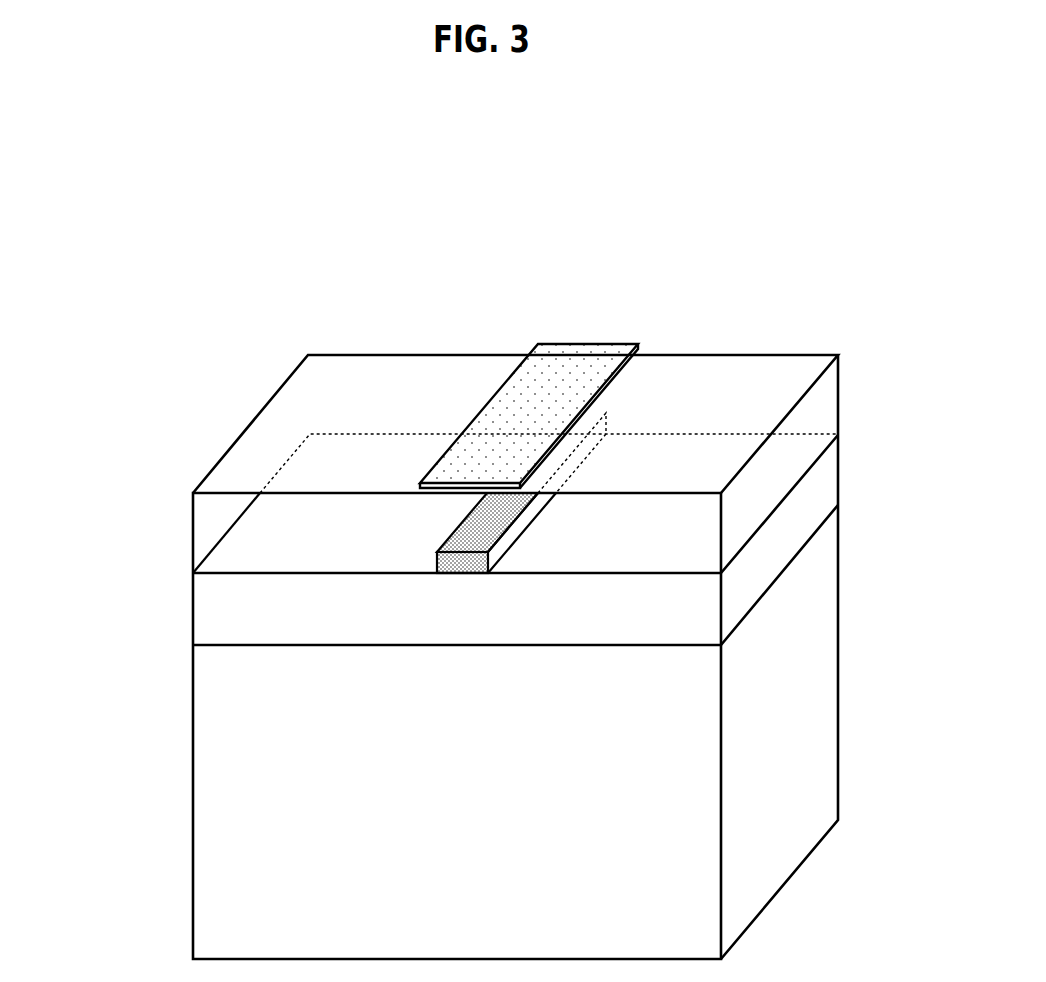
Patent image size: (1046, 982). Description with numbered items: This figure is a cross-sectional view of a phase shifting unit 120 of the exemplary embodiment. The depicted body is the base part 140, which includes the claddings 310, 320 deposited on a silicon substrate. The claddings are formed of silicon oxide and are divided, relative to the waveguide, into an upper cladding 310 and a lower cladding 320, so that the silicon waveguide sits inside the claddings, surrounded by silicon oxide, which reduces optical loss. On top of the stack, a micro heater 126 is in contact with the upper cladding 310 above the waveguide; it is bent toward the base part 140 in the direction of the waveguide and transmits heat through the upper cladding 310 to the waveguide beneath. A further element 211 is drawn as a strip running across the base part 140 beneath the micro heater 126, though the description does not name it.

The heat generating assembly 120 is at (353, 203).
The micro heater 126 is at (502, 393).
The base part 140 is at (853, 355).
The electrode 211 is at (437, 560).
The upper cladding 310 is at (207, 508).
The lower cladding 320 is at (353, 612).